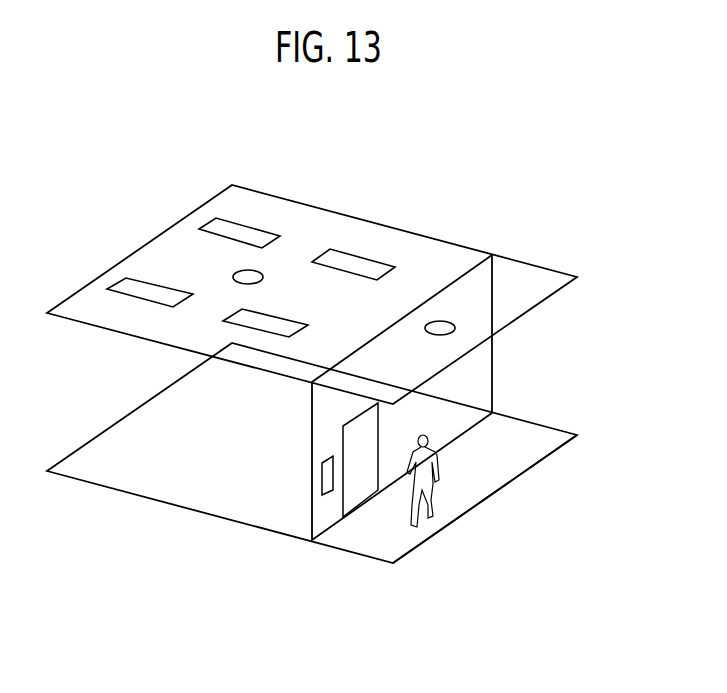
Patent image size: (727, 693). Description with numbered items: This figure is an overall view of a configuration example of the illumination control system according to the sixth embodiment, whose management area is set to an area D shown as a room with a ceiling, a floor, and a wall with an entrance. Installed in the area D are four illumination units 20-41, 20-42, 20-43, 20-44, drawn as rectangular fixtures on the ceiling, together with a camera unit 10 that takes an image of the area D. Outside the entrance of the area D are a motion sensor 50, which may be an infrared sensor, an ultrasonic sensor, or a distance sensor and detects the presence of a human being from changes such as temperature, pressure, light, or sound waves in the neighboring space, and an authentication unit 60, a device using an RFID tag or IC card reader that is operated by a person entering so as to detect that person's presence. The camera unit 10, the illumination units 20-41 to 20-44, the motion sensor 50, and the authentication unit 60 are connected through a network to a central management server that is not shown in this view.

The illumination unit 20-41 is at (143, 281).
The illumination unit 20-42 is at (255, 333).
The illumination unit 20-43 is at (255, 228).
The illumination unit 20-44 is at (373, 258).
The camera unit 10 is at (263, 277).
The motion sensor 50 is at (455, 327).
The authentication unit 60 is at (328, 495).
The area D is at (505, 487).